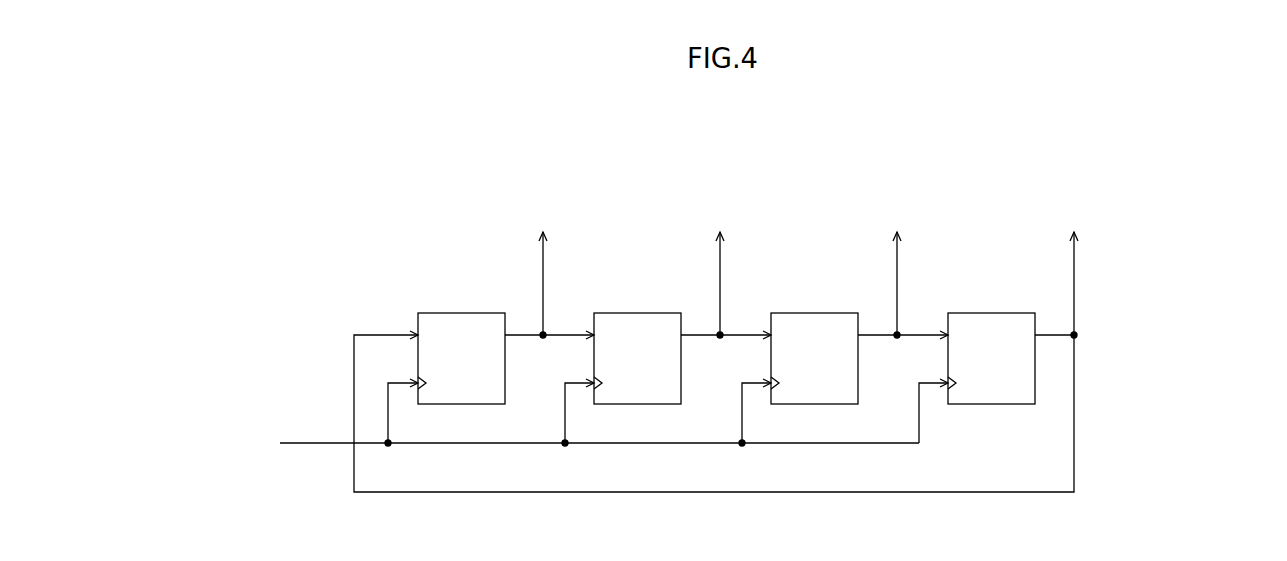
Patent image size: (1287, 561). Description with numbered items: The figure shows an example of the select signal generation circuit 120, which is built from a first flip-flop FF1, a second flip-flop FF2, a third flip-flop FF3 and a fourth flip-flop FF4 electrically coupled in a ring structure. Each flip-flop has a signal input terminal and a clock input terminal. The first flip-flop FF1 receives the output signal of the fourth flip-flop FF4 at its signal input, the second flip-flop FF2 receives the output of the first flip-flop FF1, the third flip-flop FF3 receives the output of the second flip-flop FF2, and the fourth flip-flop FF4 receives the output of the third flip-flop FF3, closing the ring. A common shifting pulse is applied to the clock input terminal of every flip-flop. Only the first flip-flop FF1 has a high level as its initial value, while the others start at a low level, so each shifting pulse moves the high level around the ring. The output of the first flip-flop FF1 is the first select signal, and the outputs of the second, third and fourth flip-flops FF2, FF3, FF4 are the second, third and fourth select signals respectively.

The select signal generation circuit 120 is at (1199, 140).
The first flip-flop FF1 is at (474, 313).
The second flip-flop FF2 is at (650, 313).
The third flip-flop FF3 is at (827, 313).
The fourth flip-flop FF4 is at (1004, 313).